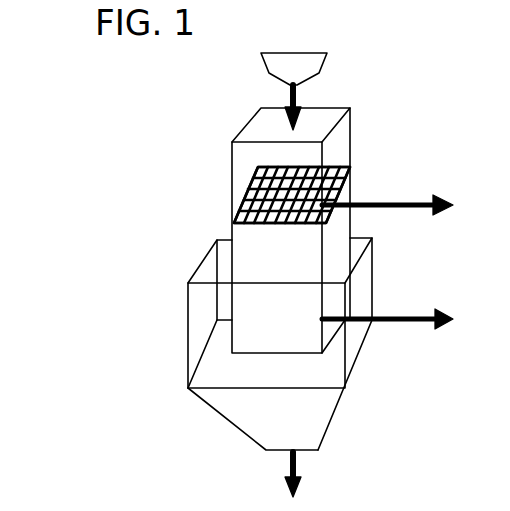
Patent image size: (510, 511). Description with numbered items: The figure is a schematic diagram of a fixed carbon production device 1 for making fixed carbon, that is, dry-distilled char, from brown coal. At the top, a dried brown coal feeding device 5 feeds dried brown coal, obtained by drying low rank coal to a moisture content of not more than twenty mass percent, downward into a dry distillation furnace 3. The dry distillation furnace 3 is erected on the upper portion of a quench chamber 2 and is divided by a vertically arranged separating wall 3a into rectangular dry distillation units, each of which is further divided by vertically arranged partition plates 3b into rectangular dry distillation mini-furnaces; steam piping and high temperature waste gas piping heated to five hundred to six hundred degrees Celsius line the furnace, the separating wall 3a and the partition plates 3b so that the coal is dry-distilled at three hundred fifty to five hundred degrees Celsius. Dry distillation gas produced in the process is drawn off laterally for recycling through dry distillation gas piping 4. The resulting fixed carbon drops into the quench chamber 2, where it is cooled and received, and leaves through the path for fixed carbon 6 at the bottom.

The fixed carbon production device 1 is at (397, 394).
The quench chamber 2 is at (355, 342).
The dry distillation furnace 3 is at (337, 223).
The separating wall 3a is at (352, 175).
The partition plates 3b is at (245, 197).
The dry distillation gas piping 4 is at (440, 198).
The dried brown coal feeding device 5 is at (320, 58).
The path for fixed carbon 6 is at (300, 462).